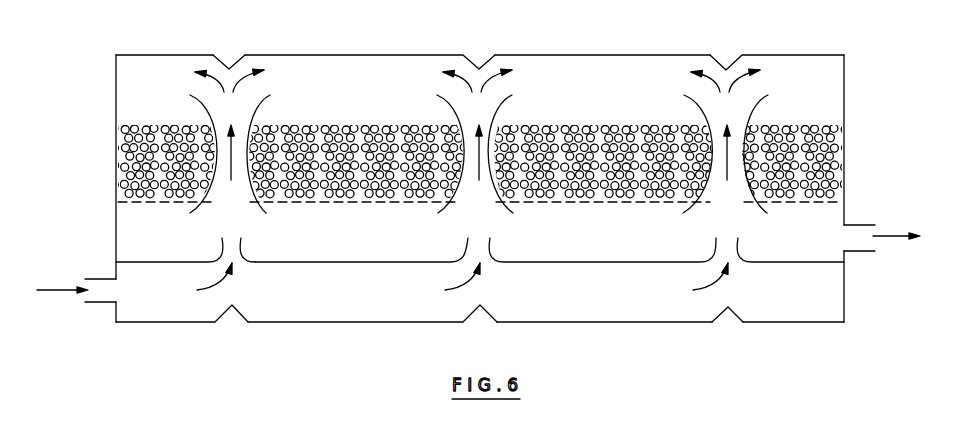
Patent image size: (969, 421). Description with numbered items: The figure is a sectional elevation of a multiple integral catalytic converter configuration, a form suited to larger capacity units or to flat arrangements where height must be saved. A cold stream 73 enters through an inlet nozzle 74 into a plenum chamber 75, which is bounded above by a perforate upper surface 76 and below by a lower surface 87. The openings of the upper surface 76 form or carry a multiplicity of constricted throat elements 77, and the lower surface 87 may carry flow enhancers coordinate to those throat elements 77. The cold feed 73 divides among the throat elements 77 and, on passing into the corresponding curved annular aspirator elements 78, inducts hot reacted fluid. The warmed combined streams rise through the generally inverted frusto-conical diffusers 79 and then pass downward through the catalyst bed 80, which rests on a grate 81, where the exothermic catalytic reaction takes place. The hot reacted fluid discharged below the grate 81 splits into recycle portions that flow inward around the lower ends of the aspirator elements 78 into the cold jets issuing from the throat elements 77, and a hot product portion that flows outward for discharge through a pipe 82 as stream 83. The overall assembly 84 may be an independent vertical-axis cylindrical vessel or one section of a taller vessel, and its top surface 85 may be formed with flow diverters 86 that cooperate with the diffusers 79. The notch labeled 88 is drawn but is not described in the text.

The cold stream 73 is at (44, 295).
The inlet nozzle 74 is at (113, 279).
The plenum chamber 75 is at (157, 323).
The upper surface 76 is at (394, 263).
The constricted throat elements 77 is at (245, 251).
The curved annular aspirator elements 78 is at (262, 222).
The inverted frusto-conical diffusers 79 is at (267, 95).
The catalyst bed 80 is at (603, 110).
The grate 81 is at (433, 205).
The pipe 82 is at (852, 225).
The stream 83 is at (898, 244).
The overall assembly 84 is at (845, 119).
The top surface 85 is at (632, 55).
The flow diverters 86 is at (226, 54).
The lower surface 87 is at (647, 323).
The inverted V-shaped notch 88 is at (729, 319).